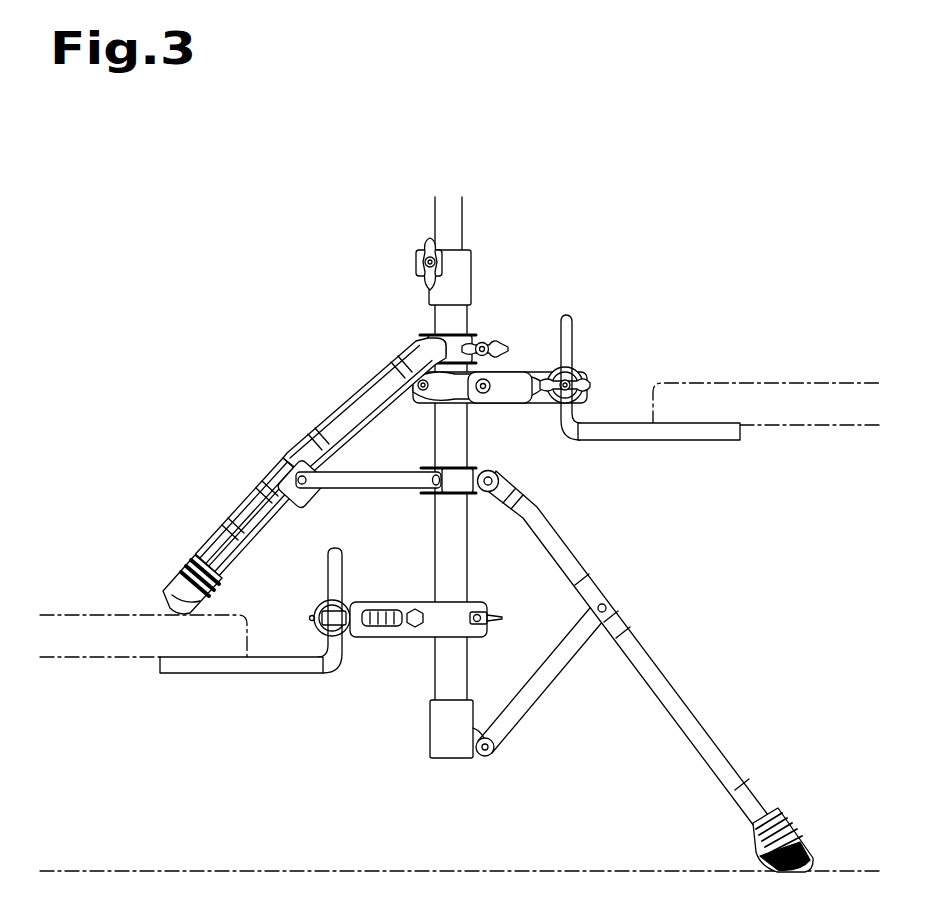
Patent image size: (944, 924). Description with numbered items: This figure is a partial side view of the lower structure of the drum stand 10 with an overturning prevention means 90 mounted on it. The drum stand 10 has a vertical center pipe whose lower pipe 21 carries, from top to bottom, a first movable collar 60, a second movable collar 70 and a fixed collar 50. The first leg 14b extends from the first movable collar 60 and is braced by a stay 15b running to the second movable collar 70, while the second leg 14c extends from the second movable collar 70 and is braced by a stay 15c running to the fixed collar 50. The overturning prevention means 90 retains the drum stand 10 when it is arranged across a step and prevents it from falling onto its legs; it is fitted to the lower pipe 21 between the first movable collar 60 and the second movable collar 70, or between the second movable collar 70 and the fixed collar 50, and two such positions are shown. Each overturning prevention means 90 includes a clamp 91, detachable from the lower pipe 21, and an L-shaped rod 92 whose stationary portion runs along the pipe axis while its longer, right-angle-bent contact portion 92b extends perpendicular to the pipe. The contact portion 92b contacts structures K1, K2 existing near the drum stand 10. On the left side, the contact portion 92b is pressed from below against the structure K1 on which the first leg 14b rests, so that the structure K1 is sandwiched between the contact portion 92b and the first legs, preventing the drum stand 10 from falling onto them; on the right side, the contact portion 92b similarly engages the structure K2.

The drum stand 10 is at (688, 147).
The lower pipe 21 is at (468, 316).
The first movable collar 60 is at (427, 336).
The overturning prevention means 90 is at (545, 374).
The clamp 91 is at (548, 403).
The L-shaped rod 92 is at (574, 348).
The contact portion 92b is at (682, 441).
The first leg 14b is at (330, 400).
The second movable collar 70 is at (472, 466).
The stay 15b is at (352, 490).
The second leg 14c is at (676, 680).
The stay 15c is at (550, 688).
The fixed collar 50 is at (430, 756).
The structure K1 is at (88, 615).
The structure K2 is at (720, 383).